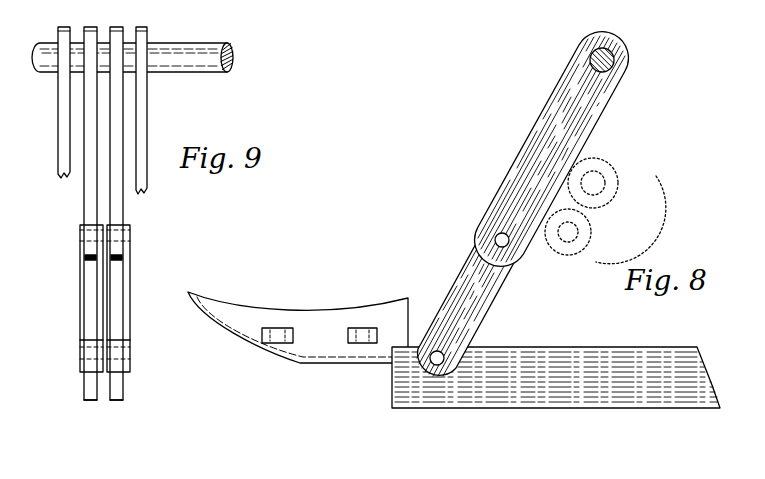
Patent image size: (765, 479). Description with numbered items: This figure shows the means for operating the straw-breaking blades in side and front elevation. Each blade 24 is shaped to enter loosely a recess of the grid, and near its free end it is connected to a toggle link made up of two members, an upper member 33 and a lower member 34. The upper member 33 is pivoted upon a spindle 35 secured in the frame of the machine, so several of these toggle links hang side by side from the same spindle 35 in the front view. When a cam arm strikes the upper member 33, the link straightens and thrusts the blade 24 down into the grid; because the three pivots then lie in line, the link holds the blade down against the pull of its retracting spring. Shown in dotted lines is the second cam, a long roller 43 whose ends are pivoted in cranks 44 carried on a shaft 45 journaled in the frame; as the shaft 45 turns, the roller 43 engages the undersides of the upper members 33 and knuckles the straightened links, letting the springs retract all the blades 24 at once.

In FIG. 9, the blade 24 is at (87, 400).
In FIG. 8, the blade 24 is at (547, 400).
In FIG. 9, the upper toggle link member 33 is at (121, 142).
In FIG. 8, the upper toggle link member 33 is at (528, 137).
In FIG. 9, the lower toggle link member 34 is at (80, 325).
In FIG. 8, the lower toggle link member 34 is at (466, 261).
In FIG. 9, the spindle 35 is at (215, 53).
In FIG. 8, the spindle 35 is at (611, 56).
In FIG. 8, the roller 43 is at (582, 240).
In FIG. 8, the crank 44 is at (613, 195).
In FIG. 8, the shaft 45 is at (598, 182).